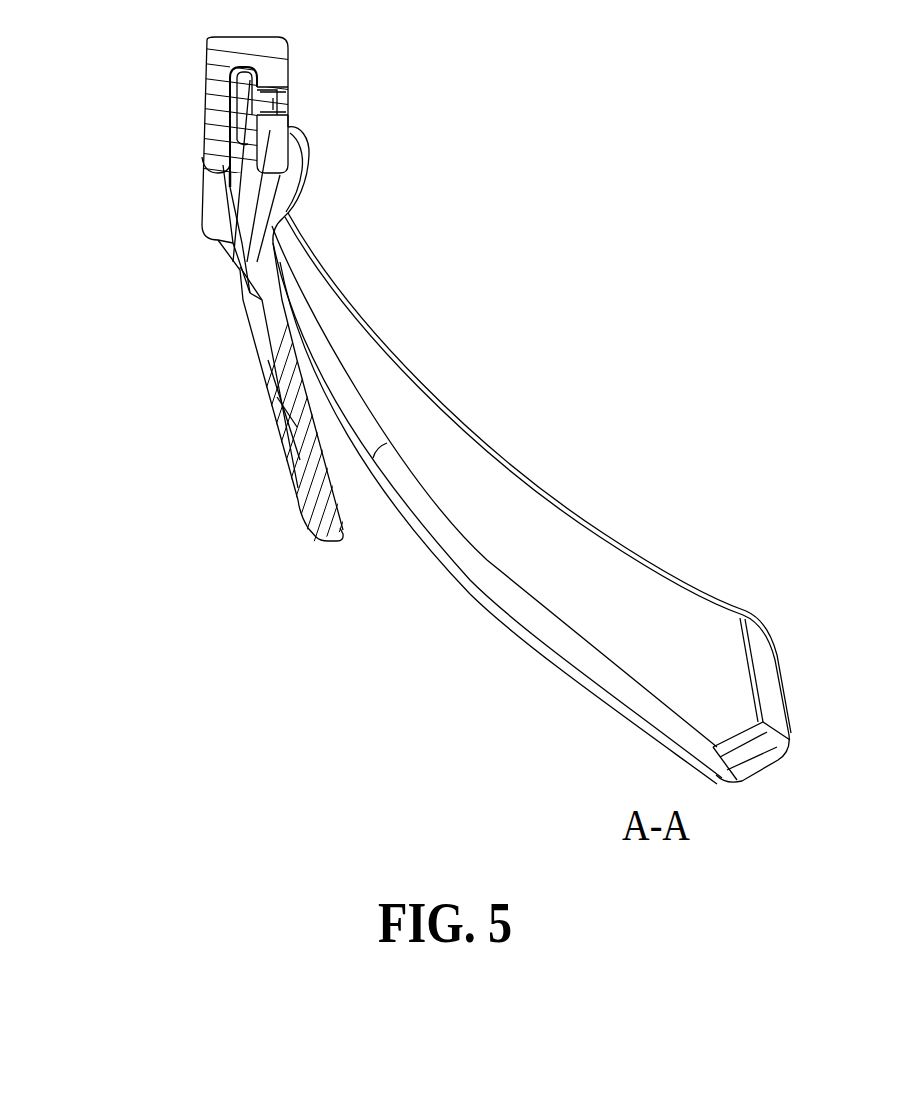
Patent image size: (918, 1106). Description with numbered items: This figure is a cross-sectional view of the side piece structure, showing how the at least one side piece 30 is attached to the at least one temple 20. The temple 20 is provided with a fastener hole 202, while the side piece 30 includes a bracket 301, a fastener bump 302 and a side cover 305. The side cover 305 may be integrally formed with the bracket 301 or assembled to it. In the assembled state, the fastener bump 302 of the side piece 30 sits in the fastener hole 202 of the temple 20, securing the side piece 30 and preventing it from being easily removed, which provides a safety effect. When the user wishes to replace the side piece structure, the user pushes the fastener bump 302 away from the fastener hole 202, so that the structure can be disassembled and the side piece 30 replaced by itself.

The temple 20 is at (538, 535).
The fastener hole 202 is at (287, 87).
The side piece 30 is at (323, 515).
The bracket 301 is at (233, 157).
The fastener bump 302 is at (263, 100).
The side cover 305 is at (292, 416).